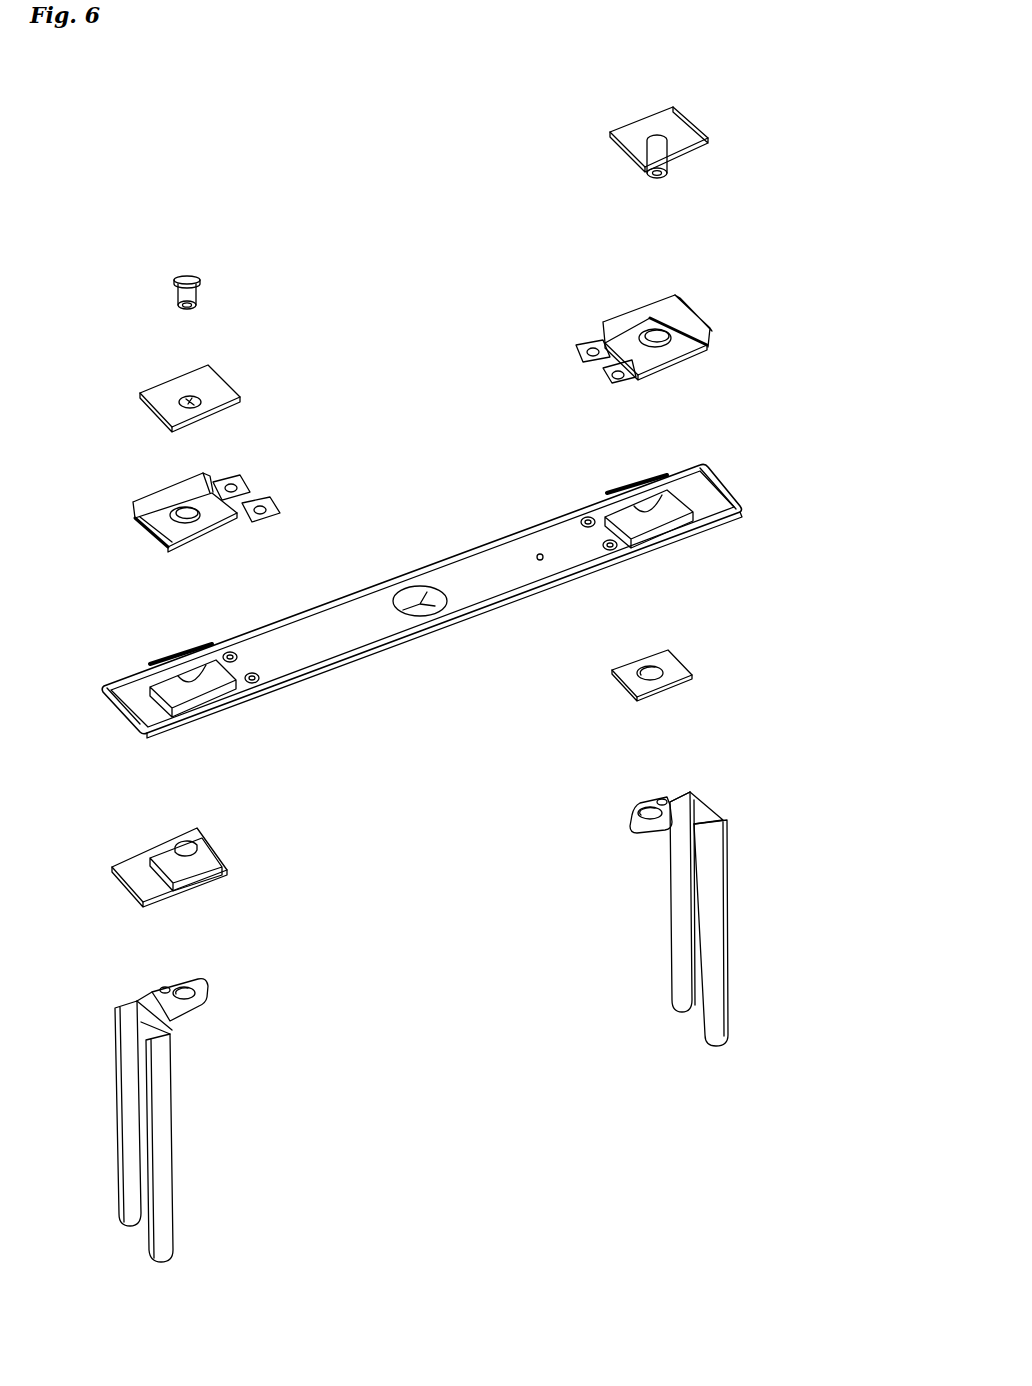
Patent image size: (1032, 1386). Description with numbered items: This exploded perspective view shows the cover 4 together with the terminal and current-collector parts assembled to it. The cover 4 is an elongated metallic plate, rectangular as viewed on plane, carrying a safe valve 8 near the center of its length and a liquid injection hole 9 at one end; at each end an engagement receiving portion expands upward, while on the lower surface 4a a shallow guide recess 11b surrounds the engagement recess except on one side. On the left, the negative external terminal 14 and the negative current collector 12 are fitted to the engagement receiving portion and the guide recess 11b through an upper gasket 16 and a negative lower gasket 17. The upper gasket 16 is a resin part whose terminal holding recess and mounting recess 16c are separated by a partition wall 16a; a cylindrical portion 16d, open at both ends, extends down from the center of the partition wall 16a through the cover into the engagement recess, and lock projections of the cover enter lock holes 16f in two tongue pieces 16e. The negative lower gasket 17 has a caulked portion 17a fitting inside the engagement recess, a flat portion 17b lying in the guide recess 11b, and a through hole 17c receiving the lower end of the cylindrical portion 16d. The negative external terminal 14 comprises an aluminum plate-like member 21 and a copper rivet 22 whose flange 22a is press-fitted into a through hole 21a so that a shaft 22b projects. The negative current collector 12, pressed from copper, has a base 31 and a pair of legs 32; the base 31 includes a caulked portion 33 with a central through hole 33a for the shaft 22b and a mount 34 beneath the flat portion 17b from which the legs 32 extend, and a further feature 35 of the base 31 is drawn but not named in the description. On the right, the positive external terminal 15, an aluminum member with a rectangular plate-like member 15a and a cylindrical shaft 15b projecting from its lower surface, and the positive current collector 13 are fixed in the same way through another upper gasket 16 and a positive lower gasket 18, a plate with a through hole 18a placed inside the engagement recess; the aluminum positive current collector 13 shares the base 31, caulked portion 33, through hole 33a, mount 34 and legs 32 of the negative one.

The cover 4 is at (396, 590).
The lower surface 4a is at (555, 533).
The safe valve 8 is at (425, 612).
The liquid injection hole 9 is at (542, 562).
The guide recess 11b is at (700, 500).
The negative current collector 12 is at (128, 997).
The positive current collector 13 is at (712, 806).
The negative external terminal 14 is at (222, 341).
The positive external terminal 15 is at (668, 147).
The plate-like member 15a is at (623, 158).
The cylindrical shaft 15b is at (662, 152).
The upper gasket 16 is at (432, 412).
The partition wall 16a is at (682, 352).
The mounting recess 16c is at (668, 352).
The cylindrical portion 16d is at (650, 328).
The tongue pieces 16e is at (580, 352).
The lock holes 16f is at (583, 362).
The negative lower gasket 17 is at (181, 855).
The caulked portion 17a is at (231, 837).
The flat portion 17b is at (142, 886).
The through hole 17c is at (188, 842).
The positive lower gasket 18 is at (677, 653).
The through hole 18a is at (630, 678).
The plate-like member 21 is at (231, 396).
The through hole 21a is at (203, 402).
The rivet 22 is at (199, 290).
The flange 22a is at (200, 280).
The shaft 22b is at (180, 292).
The base 31 is at (415, 930).
The legs 32 is at (160, 1210).
The caulked portion 33 is at (412, 951).
The through hole 33a is at (195, 1002).
The mount 34 is at (145, 1000).
The projection 35 is at (170, 990).